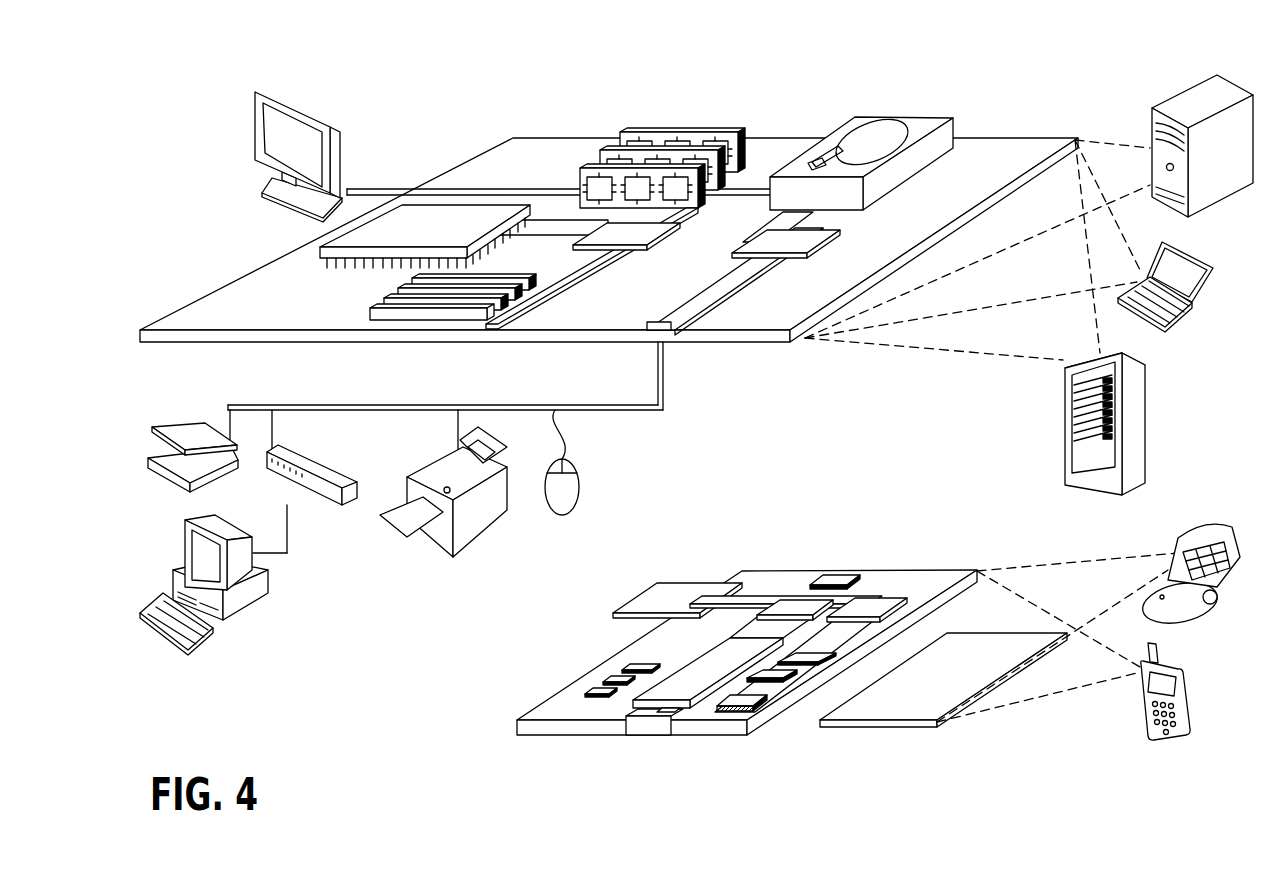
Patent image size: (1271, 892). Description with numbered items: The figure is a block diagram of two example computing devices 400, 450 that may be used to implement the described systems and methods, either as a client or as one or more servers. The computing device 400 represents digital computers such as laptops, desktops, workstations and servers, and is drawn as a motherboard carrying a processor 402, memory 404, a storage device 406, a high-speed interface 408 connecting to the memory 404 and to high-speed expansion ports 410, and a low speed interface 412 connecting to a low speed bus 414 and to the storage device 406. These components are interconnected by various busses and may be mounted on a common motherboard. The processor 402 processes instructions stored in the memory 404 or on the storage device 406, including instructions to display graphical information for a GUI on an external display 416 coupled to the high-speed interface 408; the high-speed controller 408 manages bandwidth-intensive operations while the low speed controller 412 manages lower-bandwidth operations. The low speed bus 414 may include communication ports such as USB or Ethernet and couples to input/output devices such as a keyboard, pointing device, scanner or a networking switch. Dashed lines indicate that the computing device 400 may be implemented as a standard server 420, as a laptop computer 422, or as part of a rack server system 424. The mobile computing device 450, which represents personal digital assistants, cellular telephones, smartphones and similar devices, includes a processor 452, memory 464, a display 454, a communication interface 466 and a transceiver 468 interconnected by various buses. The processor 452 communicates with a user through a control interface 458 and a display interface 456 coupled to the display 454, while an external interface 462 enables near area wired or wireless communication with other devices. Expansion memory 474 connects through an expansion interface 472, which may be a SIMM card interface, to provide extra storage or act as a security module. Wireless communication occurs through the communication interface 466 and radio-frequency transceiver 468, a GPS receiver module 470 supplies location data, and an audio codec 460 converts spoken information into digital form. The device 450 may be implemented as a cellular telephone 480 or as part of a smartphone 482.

The computing device 400 is at (112, 152).
The processor 402 is at (320, 252).
The memory 404 is at (628, 132).
The storage device 406 is at (848, 117).
The high-speed interface 408 is at (600, 236).
The high-speed expansion ports 410 is at (393, 304).
The low speed interface 412 is at (768, 235).
The low speed bus 414 is at (675, 331).
The display 416 is at (256, 92).
The standard server 420 is at (1152, 127).
The laptop computer 422 is at (1213, 260).
The rack server system 424 is at (1065, 448).
The computing device 450 is at (478, 733).
The processor 452 is at (683, 705).
The display 454 is at (905, 712).
The display interface 456 is at (745, 710).
The control interface 458 is at (775, 690).
The audio codec 460 is at (805, 672).
The external interface 462 is at (648, 726).
The memory 464 is at (600, 688).
The communication interface 466 is at (790, 602).
The transceiver 468 is at (868, 604).
The GPS receiver module 470 is at (838, 580).
The expansion interface 472 is at (730, 583).
The expansion memory 474 is at (662, 585).
The cellular telephone 480 is at (1182, 535).
The smartphone 482 is at (1140, 700).